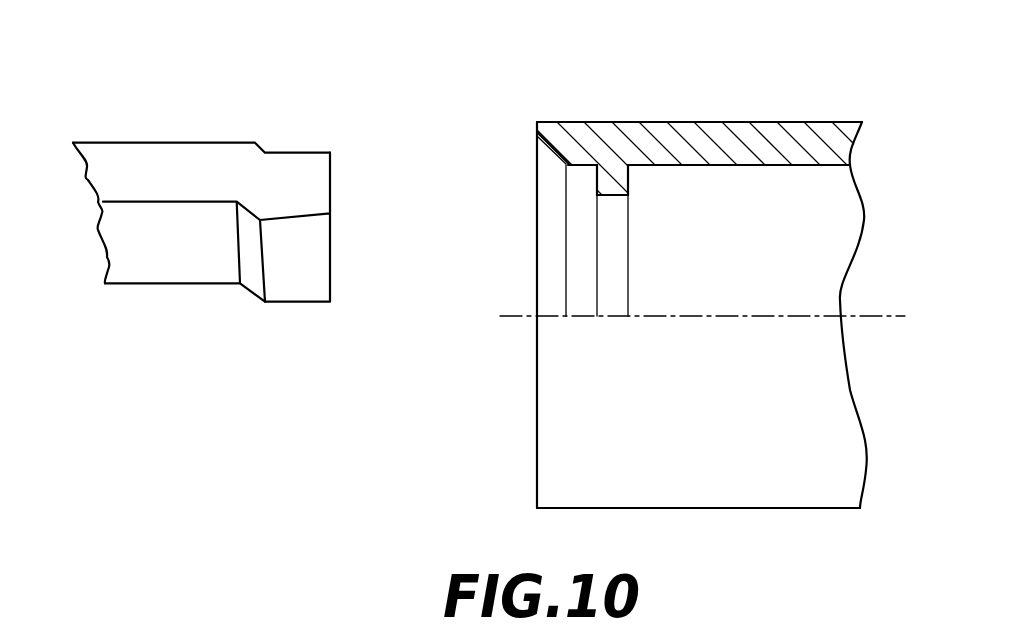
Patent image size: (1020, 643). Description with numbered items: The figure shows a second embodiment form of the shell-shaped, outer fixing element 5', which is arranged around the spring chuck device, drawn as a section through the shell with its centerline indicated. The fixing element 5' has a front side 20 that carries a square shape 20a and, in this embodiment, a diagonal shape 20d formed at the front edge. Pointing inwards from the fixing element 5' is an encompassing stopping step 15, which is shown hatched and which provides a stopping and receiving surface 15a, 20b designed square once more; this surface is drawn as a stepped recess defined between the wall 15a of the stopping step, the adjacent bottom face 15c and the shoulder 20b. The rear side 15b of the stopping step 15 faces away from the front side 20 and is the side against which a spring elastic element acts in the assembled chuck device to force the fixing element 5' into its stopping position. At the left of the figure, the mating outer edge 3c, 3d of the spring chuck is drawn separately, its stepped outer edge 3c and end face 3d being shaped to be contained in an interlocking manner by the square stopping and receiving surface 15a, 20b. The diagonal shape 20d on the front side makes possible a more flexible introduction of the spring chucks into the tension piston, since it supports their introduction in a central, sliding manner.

The outer edge 3c is at (293, 150).
The outer edge 3d is at (332, 177).
The front side 20 is at (462, 369).
The square shape 20a is at (536, 122).
The square stopping and receiving surface 20b is at (584, 165).
The diagonal shape 20d is at (552, 150).
The stopping step 15 is at (610, 187).
The stopping and receiving surface 15a is at (598, 167).
The rear side of stopping step 15b is at (629, 185).
The bottom face of ring protrusion 15c is at (617, 197).
The shell-shaped fixing element 5' is at (715, 344).